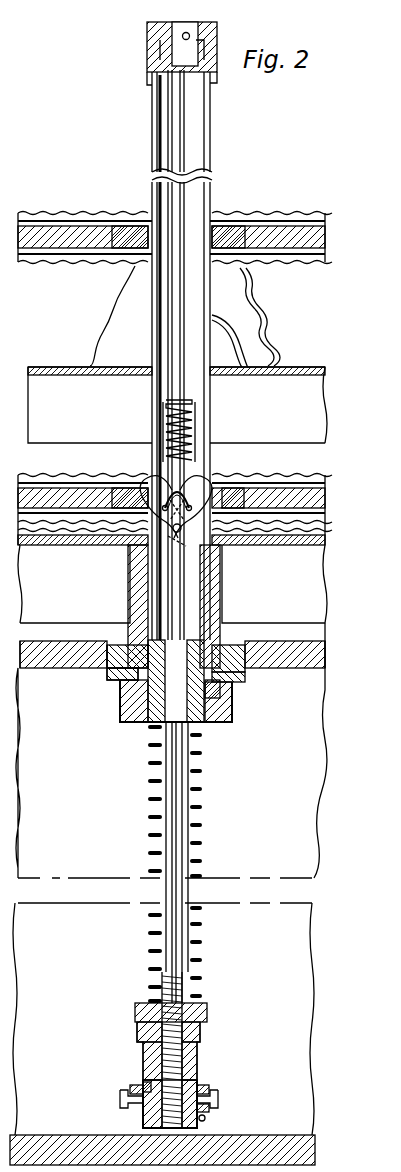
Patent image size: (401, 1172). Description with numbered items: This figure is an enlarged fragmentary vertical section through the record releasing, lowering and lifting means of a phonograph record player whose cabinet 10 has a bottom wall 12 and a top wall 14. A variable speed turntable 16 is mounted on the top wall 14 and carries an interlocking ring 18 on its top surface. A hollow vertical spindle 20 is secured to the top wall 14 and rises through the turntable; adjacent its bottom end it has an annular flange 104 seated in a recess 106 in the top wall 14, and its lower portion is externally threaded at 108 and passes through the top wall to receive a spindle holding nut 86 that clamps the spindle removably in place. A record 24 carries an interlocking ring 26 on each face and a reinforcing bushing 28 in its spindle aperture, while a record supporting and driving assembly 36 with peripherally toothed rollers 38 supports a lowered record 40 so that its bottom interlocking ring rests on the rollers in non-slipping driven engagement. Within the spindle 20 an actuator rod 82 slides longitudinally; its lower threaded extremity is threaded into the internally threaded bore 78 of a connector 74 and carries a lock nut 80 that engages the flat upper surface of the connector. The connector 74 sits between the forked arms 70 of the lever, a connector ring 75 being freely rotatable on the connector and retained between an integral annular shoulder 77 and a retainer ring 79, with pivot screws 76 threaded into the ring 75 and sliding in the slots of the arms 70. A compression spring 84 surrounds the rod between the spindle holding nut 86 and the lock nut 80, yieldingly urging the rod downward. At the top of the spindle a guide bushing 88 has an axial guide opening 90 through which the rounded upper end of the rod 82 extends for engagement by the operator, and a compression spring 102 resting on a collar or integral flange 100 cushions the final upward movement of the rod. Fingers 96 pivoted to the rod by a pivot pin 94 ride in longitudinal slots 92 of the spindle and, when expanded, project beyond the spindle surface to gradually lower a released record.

The casing or cabinet 10 is at (296, 760).
The bottom wall 12 is at (274, 1142).
The top wall 14 is at (50, 656).
The variable speed turntable 16 is at (292, 546).
The interlocking ring 18 is at (306, 533).
The vertical spindle 20 is at (140, 575).
The record 24 is at (312, 506).
The interlocking ring 26 is at (278, 215).
The reinforcing bushing 28 is at (243, 499).
The record supporting and driving assembly 36 is at (313, 412).
The peripherally toothed rollers 38 is at (262, 337).
The record 40 is at (305, 246).
The forked arms 70 is at (134, 1090).
The connector 74 is at (188, 1055).
The connector ring 75 is at (212, 1106).
The pivot screws 76 is at (126, 1100).
The annular shoulder 77 is at (146, 1090).
The internal threads 78 is at (186, 1086).
The retainer ring 79 is at (206, 1121).
The lock nut 80 is at (208, 1012).
The actuator rod 82 is at (174, 818).
The compression spring 84 is at (194, 860).
The spindle holding nut 86 is at (224, 712).
The guide bushing 88 is at (164, 66).
The axial guide opening 90 is at (194, 42).
The longitudinally extending slots 92 is at (152, 152).
The pivot pin 94 is at (186, 538).
The fingers 96 is at (147, 482).
The collar or integral flange 100 is at (212, 452).
The compression spring 102 is at (195, 437).
The annular flange 104 is at (120, 650).
The recess 106 is at (234, 655).
The external threads 108 is at (222, 689).